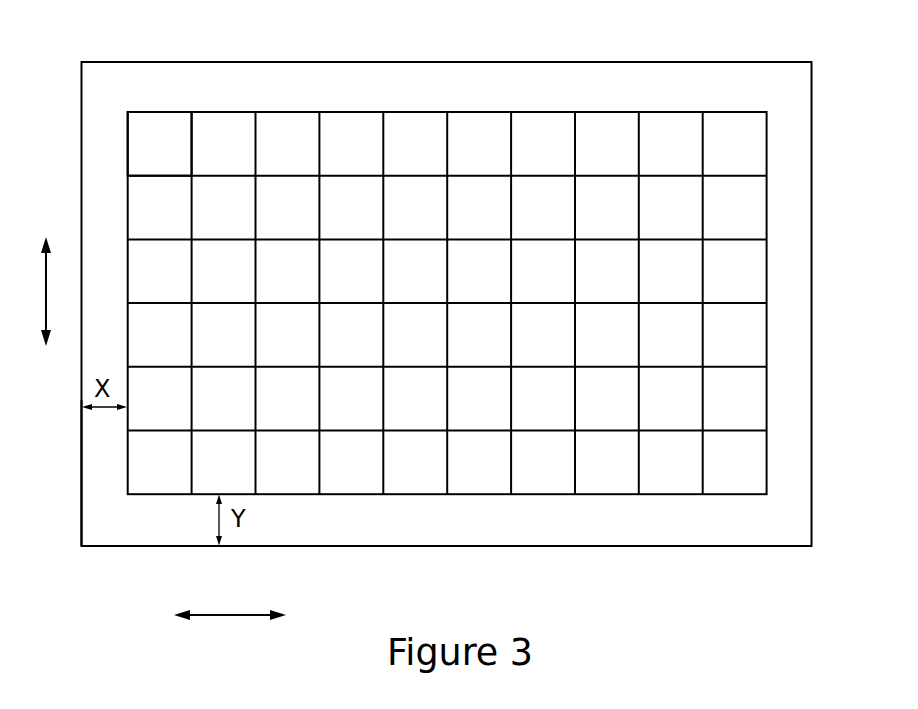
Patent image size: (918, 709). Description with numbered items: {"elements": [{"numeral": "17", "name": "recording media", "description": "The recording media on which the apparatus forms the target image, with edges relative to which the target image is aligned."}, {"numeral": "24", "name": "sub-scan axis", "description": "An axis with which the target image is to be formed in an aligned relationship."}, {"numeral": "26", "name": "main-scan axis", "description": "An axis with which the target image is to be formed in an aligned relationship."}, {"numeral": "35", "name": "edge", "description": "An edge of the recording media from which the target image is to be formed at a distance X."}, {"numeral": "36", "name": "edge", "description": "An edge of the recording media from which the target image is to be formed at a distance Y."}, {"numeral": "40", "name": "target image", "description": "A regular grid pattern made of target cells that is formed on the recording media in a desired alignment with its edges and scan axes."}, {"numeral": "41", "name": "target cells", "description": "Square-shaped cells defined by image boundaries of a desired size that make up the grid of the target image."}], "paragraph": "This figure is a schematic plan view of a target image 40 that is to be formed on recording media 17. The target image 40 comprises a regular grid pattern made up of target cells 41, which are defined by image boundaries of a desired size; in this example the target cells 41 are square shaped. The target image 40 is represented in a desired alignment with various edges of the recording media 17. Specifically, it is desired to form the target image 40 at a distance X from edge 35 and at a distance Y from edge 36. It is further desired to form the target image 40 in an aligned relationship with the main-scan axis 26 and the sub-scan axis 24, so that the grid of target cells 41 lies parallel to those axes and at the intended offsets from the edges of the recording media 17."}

The substrate 17 is at (812, 485).
The horizontal direction 24 is at (215, 613).
The vertical direction 26 is at (44, 287).
The left edge region 35 is at (81, 503).
The bottom edge region 36 is at (163, 547).
The array region 40 is at (767, 278).
The cell 41 is at (155, 137).